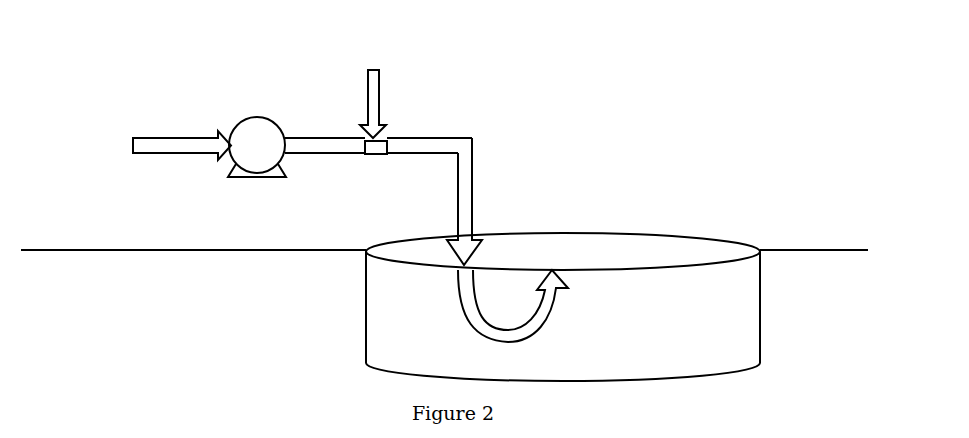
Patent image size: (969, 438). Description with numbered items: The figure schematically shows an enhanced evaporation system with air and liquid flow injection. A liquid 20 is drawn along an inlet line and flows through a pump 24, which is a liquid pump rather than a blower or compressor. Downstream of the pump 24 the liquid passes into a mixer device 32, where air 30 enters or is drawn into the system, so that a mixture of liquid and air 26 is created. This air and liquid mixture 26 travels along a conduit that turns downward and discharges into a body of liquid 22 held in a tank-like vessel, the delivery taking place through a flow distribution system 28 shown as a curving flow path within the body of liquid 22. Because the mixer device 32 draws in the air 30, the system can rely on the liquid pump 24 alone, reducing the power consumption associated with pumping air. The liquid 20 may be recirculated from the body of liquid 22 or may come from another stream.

The liquid 20 is at (175, 137).
The body of liquid 22 is at (720, 315).
The pump 24 is at (254, 140).
The mixture of liquid and air 26 is at (473, 193).
The flow distribution system 28 is at (513, 306).
The air 30 is at (373, 68).
The mixer device 32 is at (378, 155).